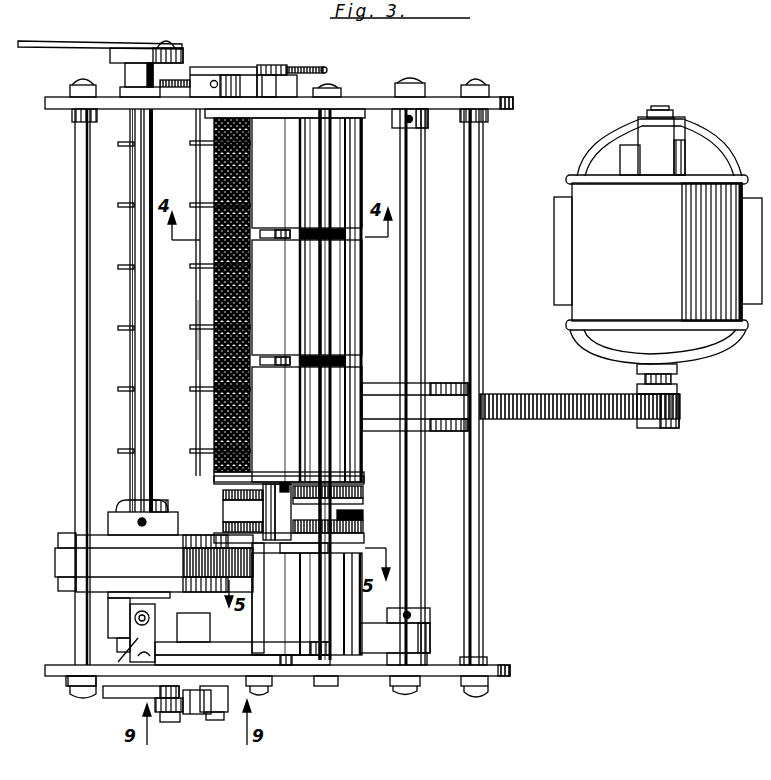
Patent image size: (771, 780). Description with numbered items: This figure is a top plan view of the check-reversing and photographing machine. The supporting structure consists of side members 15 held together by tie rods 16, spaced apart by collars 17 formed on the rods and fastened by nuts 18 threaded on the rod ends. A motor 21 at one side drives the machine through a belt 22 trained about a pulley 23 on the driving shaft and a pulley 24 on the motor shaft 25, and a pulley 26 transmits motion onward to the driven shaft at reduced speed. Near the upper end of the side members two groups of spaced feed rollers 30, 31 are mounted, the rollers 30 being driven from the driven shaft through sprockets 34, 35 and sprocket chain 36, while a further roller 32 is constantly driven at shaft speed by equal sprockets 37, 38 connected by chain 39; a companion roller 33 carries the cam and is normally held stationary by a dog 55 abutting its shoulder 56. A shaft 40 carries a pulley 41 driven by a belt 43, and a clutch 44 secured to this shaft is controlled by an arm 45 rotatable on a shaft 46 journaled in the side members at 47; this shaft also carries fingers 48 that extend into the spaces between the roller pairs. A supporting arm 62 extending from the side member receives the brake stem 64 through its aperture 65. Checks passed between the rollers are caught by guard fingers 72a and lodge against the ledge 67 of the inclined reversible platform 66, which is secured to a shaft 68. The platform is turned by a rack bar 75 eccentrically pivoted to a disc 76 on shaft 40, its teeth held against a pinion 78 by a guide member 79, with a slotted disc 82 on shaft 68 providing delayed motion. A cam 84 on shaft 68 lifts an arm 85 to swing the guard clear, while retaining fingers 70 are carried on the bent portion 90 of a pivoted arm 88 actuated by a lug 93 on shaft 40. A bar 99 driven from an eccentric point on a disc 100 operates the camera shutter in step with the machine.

The side members 15 is at (432, 106).
The tie rods 16 is at (88, 188).
The collars 17 is at (486, 124).
The nuts 18 is at (486, 86).
The motor 21 is at (658, 235).
The belt 22 is at (542, 394).
The pulley 23 is at (426, 390).
The pulley 24 is at (680, 422).
The motor shaft 25 is at (678, 384).
The pulley 26 is at (428, 612).
The rollers 30 is at (355, 196).
The rollers 31 is at (218, 316).
The roller 32 is at (380, 606).
The roller 33 is at (265, 598).
The sprocket 34 is at (222, 494).
The sprocket 35 is at (360, 488).
The sprocket chain 36 is at (362, 500).
The sprocket 37 is at (222, 526).
The sprocket 38 is at (362, 528).
The chain 39 is at (348, 516).
The shaft 40 is at (134, 352).
The pulley 41 is at (66, 540).
The belt 43 is at (56, 565).
The clutch 44 is at (128, 622).
The arm 45 is at (258, 648).
The shaft 46 is at (326, 334).
The journal 47 is at (336, 92).
The fingers 48 is at (306, 242).
The dog 55 is at (307, 604).
The shoulder 56 is at (280, 550).
The supporting arm 62 is at (92, 690).
The stem 64 is at (135, 618).
The aperture 65 is at (130, 636).
The inclined platform 66 is at (216, 254).
The ledge 67 is at (202, 352).
The shaft 68 is at (222, 510).
The fingers 70 is at (124, 208).
The fingers 72a is at (190, 146).
The rack bar 75 is at (174, 718).
The disc 76 is at (112, 700).
The pinion 78 is at (226, 718).
The guide member 79 is at (190, 720).
The disc 82 is at (252, 692).
The cam 84 is at (300, 68).
The arm 85 is at (254, 70).
The arm 88 is at (244, 56).
The portion 90 is at (128, 296).
The lug 93 is at (162, 78).
The bar 99 is at (100, 57).
The disc 100 is at (118, 60).